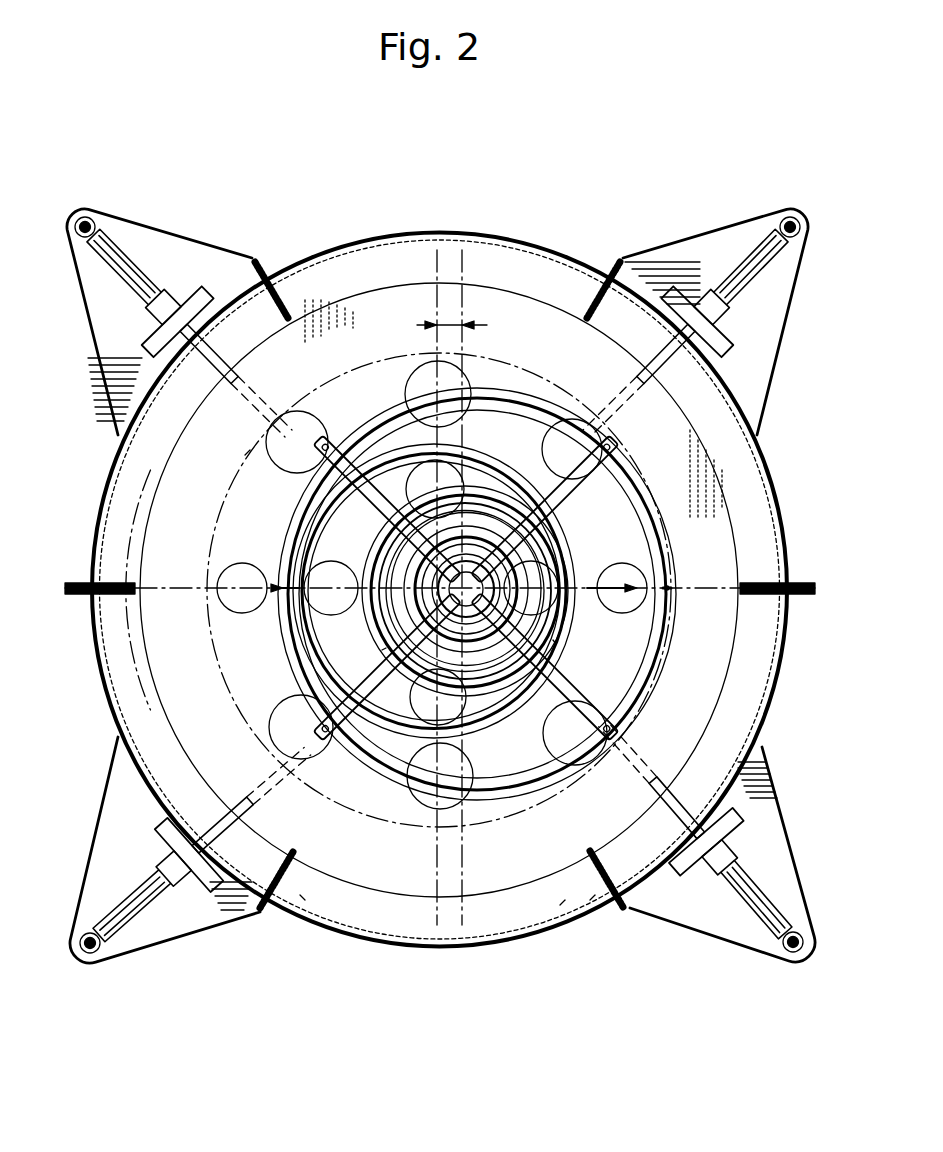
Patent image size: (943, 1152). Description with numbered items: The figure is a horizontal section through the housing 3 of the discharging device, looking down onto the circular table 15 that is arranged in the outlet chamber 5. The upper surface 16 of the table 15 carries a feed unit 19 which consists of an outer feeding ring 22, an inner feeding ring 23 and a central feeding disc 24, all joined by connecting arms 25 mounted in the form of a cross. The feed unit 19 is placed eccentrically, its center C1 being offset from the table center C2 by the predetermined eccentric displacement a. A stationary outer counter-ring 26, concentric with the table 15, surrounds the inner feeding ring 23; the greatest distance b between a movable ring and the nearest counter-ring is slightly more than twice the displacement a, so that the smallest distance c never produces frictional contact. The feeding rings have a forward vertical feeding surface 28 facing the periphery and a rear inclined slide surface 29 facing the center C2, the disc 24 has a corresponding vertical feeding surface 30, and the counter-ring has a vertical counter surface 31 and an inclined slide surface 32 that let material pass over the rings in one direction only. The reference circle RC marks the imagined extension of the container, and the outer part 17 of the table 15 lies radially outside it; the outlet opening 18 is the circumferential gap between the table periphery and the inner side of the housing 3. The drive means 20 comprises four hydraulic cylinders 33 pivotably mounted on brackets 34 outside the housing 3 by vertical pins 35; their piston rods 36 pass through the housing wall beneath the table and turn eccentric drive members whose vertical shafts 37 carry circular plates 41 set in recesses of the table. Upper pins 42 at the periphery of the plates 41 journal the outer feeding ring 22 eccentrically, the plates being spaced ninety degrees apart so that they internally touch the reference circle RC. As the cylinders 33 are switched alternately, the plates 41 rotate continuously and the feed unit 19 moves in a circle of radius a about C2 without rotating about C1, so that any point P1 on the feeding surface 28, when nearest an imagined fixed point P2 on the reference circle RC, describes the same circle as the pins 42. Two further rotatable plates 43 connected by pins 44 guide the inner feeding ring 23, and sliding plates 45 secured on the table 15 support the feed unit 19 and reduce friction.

The housing 3 is at (776, 458).
The outlet chamber 5 is at (762, 640).
The circular table 15 is at (735, 700).
The upper surface of the table 16 is at (432, 920).
The outer part of the table 17 is at (492, 905).
The outlet opening 18 is at (572, 900).
The feed unit 19 is at (276, 654).
The drive means 20 is at (128, 869).
The outer feeding ring 22 is at (582, 770).
The inner feeding ring 23 is at (562, 650).
The feeding disc 24 is at (462, 650).
The connecting arms 25 is at (633, 682).
The outer counter-ring 26 is at (372, 748).
The feeding surface 28 is at (500, 404).
The slide surface 29 is at (538, 415).
The feeding surface 30 is at (470, 520).
The counter surface 31 is at (498, 795).
The slide surface 32 is at (500, 715).
The hydraulic cylinders 33 is at (137, 262).
The brackets 34 is at (104, 332).
The vertical pins 35 is at (92, 955).
The piston rods 36 is at (702, 372).
The vertical shaft 37 is at (258, 478).
The circular plate 41 is at (266, 443).
The upper vertical pin 42 is at (325, 440).
The rotatably journalled plates 43 is at (335, 562).
The pins 44 is at (358, 620).
The sliding plates 45 is at (414, 405).
The eccentric displacement a is at (463, 320).
The greatest distance b is at (612, 563).
The smallest distance c is at (258, 563).
The point on the feeding surface P1 is at (667, 572).
The fixed point on the reference circle P2 is at (668, 592).
The center of the feeding rings C1 is at (556, 640).
The center of the table C2 is at (382, 650).
The reference circle RC is at (207, 643).